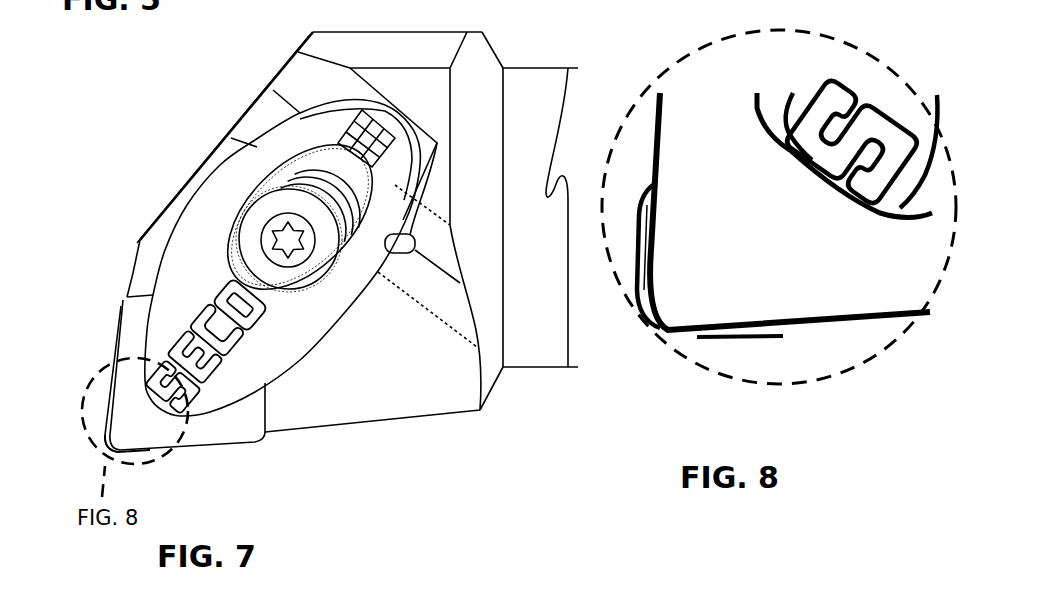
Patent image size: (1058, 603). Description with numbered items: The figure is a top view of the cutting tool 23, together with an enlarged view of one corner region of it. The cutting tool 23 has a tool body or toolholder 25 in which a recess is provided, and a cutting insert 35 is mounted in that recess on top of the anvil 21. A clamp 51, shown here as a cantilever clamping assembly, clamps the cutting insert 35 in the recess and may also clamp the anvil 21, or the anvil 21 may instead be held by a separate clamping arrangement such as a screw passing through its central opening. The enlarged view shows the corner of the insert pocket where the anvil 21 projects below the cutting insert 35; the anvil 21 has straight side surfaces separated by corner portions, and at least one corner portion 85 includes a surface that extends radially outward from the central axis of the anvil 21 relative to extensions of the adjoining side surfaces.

In FIG. 7, the anvil 21 is at (132, 460).
In FIG. 8, the anvil 21 is at (630, 243).
In FIG. 7, the cutting tool 23 is at (160, 171).
In FIG. 7, the toolholder 25 is at (140, 254).
In FIG. 7, the cutting insert 35 is at (120, 328).
In FIG. 8, the cutting insert 35 is at (823, 280).
In FIG. 7, the clamp 51 is at (215, 208).
In FIG. 8, the clamp 51 is at (895, 212).
In FIG. 8, the corner portion 85 is at (708, 342).